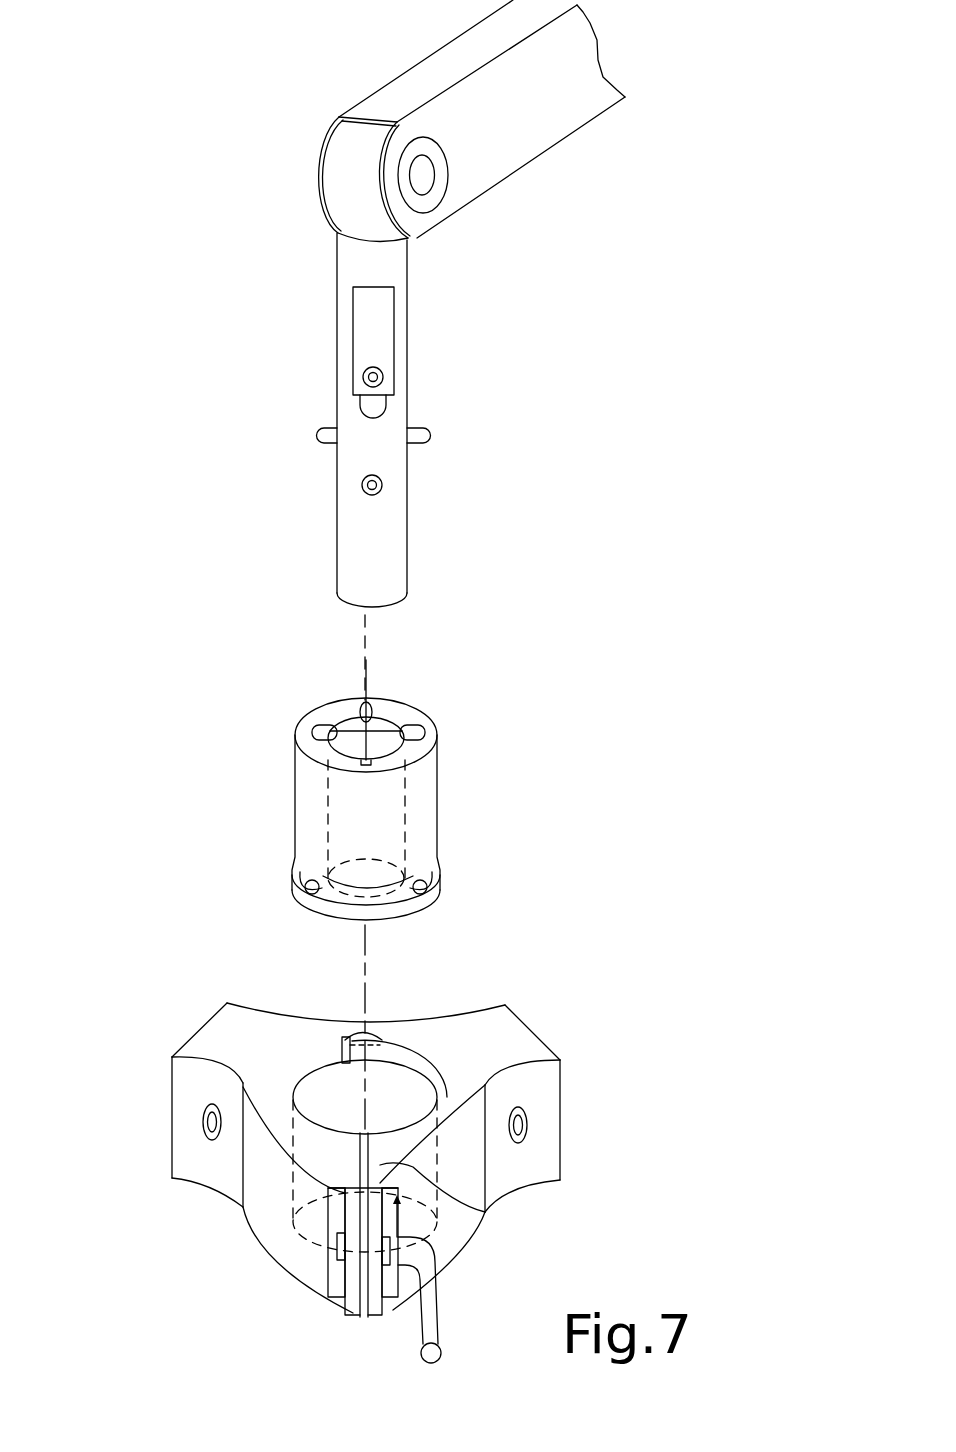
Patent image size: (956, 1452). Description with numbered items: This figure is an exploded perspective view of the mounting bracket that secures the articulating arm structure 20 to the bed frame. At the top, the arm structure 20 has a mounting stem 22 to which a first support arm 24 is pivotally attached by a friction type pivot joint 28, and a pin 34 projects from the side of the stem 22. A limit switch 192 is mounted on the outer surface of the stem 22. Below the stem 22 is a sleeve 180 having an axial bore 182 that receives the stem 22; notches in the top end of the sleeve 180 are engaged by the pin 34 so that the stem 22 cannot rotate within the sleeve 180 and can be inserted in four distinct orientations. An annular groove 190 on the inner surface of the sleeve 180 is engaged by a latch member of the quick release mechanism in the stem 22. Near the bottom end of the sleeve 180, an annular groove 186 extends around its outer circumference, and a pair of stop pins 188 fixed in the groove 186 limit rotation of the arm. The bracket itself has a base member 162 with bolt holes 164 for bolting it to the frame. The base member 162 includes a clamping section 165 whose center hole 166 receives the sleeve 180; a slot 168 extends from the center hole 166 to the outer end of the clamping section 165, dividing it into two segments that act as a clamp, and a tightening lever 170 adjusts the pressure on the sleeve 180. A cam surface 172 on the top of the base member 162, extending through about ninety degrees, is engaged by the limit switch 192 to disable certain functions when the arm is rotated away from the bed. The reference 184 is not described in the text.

The arm structure 20 is at (265, 154).
The mounting stem 22 is at (337, 555).
The first support arm 24 is at (422, 68).
The friction type pivot joint 28 is at (428, 178).
The pin 34 is at (317, 433).
The base member 162 is at (172, 1070).
The bolt holes 164 is at (210, 1122).
The clamping section 165 is at (272, 1107).
The center hole 166 is at (407, 1080).
The slot 168 is at (488, 1213).
The tightening lever 170 is at (443, 1347).
The cam surface 172 is at (390, 1045).
The sleeve 180 is at (297, 813).
The axial bore 182 is at (392, 722).
The slots 184 is at (427, 727).
The annular groove 186 is at (393, 893).
The stop pins 188 is at (437, 884).
The annular groove 190 is at (337, 727).
The limit switch 192 is at (387, 408).